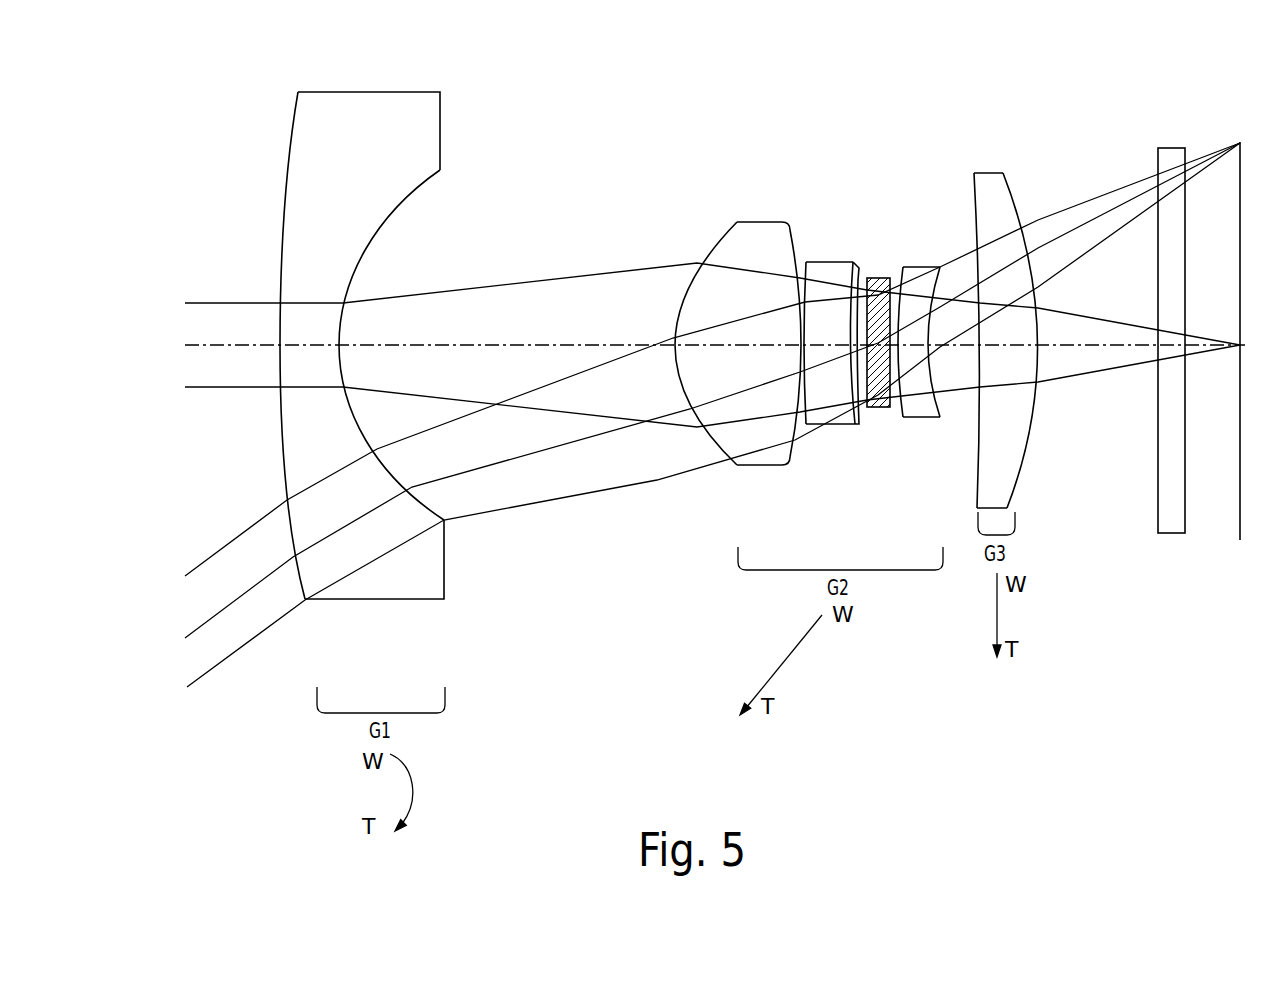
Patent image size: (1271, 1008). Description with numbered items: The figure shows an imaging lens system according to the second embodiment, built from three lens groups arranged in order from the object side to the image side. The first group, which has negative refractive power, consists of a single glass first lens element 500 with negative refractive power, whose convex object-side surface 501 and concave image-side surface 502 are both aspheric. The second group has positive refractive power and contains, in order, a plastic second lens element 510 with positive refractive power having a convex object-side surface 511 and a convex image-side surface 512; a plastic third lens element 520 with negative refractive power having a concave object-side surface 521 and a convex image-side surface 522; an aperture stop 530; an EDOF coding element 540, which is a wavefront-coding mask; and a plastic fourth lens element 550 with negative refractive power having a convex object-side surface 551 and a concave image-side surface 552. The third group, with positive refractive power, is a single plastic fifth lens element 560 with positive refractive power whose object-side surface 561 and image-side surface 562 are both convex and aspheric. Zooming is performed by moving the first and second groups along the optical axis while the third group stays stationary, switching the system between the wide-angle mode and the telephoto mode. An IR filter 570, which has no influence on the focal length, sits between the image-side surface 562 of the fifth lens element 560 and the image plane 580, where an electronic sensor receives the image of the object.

The first lens element 500 is at (375, 105).
The object-side surface of the first lens element 501 is at (281, 492).
The image-side surface of the first lens element 502 is at (388, 452).
The second lens element 510 is at (746, 238).
The object-side surface of the second lens element 511 is at (713, 452).
The image-side surface of the second lens element 512 is at (782, 374).
The third lens element 520 is at (823, 268).
The object-side surface of the third lens element 521 is at (814, 370).
The image-side surface of the third lens element 522 is at (854, 365).
The aperture stop 530 is at (857, 275).
The EDOF coding element 540 is at (884, 284).
The fourth lens element 550 is at (914, 280).
The object-side surface of the fourth lens element 551 is at (899, 422).
The image-side surface of the fourth lens element 552 is at (946, 415).
The fifth lens element 560 is at (994, 202).
The object-side surface of the fifth lens element 561 is at (975, 452).
The image-side surface of the fifth lens element 562 is at (1039, 444).
The IR filter 570 is at (1176, 182).
The image plane 580 is at (1235, 182).